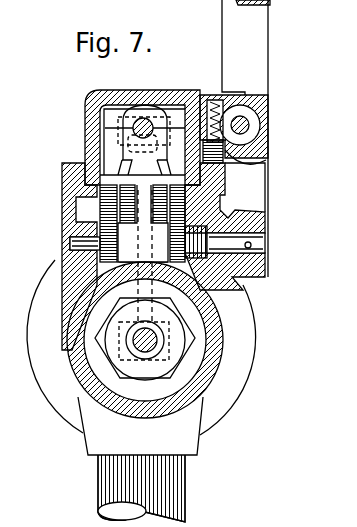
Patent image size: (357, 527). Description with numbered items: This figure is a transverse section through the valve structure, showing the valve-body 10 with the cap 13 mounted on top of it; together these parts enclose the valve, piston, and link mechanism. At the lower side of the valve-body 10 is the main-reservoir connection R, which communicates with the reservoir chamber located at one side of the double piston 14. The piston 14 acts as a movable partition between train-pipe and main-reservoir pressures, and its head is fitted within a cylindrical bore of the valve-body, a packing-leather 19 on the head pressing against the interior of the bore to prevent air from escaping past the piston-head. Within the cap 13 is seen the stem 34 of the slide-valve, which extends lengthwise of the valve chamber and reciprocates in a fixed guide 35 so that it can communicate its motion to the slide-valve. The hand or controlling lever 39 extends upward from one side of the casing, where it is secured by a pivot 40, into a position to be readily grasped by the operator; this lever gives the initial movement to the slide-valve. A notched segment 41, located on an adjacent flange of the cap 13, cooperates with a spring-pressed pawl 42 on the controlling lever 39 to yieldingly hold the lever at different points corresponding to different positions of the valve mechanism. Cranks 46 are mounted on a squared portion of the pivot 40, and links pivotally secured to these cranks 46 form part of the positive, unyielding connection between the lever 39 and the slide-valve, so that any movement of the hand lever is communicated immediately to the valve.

The valve-body 10 is at (73, 380).
The cap 13 is at (85, 131).
The double piston 14 is at (145, 341).
The packing-leather 19 is at (205, 352).
The stem 34 is at (149, 123).
The fixed guide 35 is at (146, 106).
The hand or controlling lever 39 is at (255, 58).
The pivot 40 is at (145, 236).
The notched segment 41 is at (238, 172).
The spring-pressed pawl 42 is at (253, 157).
The crank 46 is at (106, 215).
The main-reservoir connection R is at (180, 498).